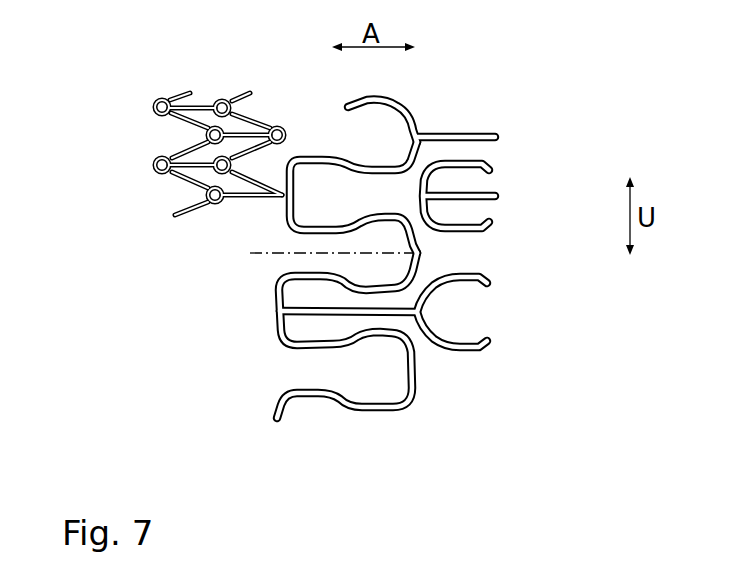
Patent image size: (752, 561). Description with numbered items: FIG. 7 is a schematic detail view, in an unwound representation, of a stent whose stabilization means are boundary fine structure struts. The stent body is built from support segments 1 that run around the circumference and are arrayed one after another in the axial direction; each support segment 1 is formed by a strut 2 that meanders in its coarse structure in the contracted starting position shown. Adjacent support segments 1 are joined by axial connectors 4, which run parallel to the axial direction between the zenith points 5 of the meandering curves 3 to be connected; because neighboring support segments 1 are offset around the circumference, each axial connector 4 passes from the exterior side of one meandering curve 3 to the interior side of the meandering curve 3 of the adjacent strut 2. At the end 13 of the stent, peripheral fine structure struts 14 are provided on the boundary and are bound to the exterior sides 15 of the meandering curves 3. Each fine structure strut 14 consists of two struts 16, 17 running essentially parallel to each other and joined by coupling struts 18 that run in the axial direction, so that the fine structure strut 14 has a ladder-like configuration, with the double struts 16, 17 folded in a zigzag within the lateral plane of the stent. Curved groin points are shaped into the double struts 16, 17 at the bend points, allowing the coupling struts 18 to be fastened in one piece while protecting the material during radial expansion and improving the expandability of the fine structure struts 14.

The support segment 1 is at (417, 455).
The strut 2 is at (422, 110).
The meandering curve 3 is at (310, 395).
The axial connector 4 is at (458, 194).
The zenith point 5 is at (423, 313).
The end of the stent 13 is at (263, 302).
The fine structure strut 14 is at (218, 86).
The exterior side 15 is at (280, 197).
The strut 16 is at (252, 122).
The strut 17 is at (178, 126).
The coupling strut 18 is at (245, 198).